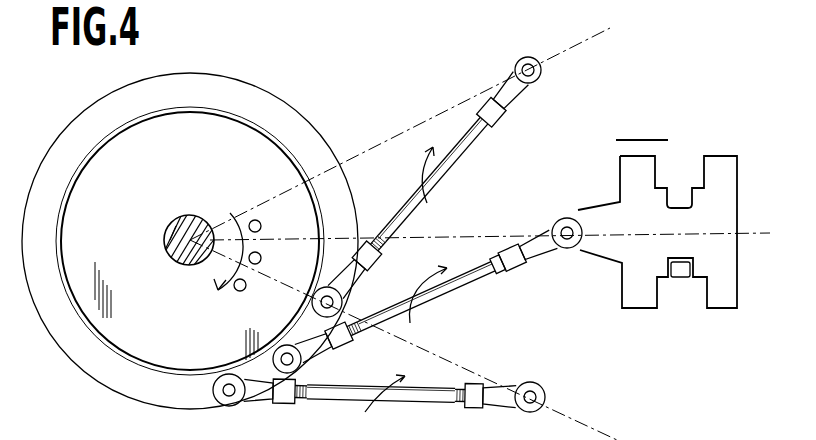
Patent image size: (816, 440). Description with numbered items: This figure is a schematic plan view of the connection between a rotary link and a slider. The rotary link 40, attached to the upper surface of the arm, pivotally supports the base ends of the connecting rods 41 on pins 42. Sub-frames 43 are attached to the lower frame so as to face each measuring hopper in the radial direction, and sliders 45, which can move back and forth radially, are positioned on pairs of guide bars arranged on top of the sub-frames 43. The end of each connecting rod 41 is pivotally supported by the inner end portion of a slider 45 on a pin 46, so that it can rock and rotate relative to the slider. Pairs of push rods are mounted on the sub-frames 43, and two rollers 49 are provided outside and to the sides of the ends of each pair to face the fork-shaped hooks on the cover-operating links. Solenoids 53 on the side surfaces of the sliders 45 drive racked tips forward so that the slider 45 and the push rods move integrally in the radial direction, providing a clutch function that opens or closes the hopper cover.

The rotary link 40 is at (248, 148).
The connecting rod 41 is at (450, 163).
The pin 42 is at (233, 405).
The sub-frame 43 is at (391, 407).
The slider 45 is at (717, 170).
The pin 46 is at (565, 250).
The roller 49 is at (668, 439).
The solenoid 53 is at (680, 272).